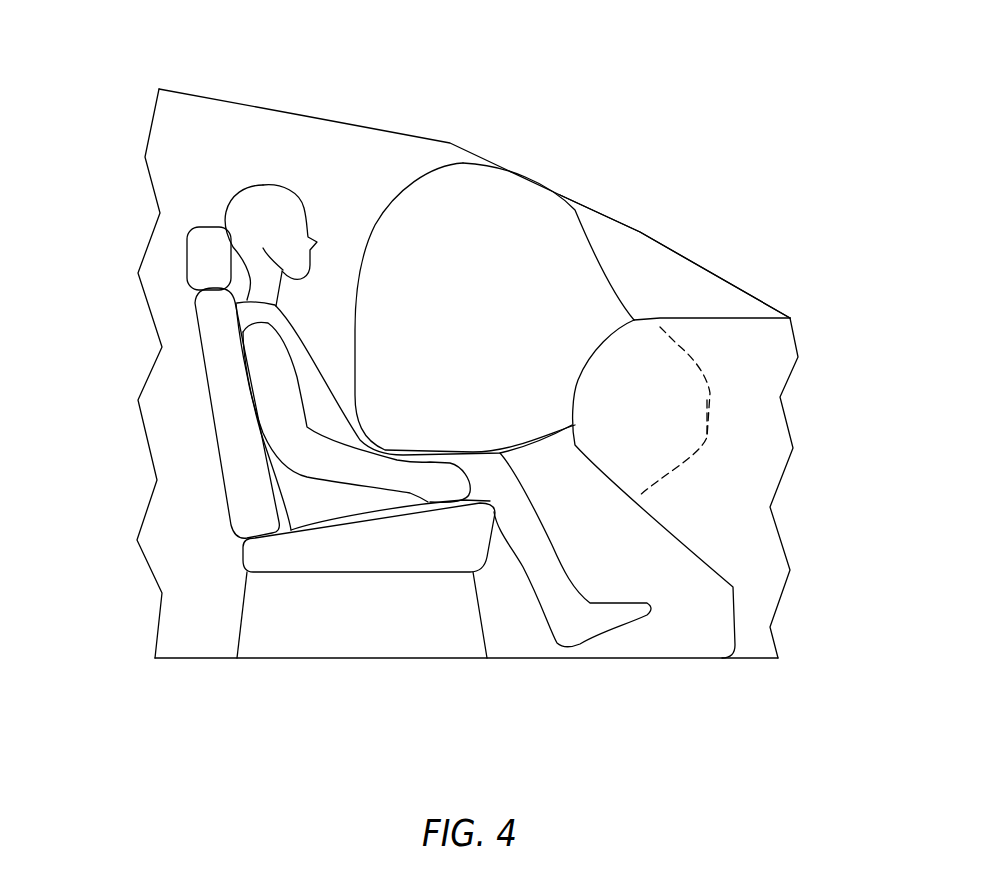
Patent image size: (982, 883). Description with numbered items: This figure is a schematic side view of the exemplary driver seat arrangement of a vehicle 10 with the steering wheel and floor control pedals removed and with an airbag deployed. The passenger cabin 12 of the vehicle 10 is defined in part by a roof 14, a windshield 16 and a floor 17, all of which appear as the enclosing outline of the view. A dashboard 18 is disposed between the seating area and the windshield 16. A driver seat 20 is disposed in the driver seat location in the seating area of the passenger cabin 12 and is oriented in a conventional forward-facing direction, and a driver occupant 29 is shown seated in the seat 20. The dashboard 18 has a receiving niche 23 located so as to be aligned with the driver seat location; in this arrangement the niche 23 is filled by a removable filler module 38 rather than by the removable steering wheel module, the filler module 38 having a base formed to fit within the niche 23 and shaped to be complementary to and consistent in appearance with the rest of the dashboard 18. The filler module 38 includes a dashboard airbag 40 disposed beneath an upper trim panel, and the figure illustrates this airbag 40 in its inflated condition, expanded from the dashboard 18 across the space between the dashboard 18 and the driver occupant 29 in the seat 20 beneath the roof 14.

The vehicle 10 is at (613, 75).
The passenger cabin 12 is at (627, 247).
The roof 14 is at (237, 103).
The windshield 16 is at (682, 253).
The floor 17 is at (517, 660).
The dashboard 18 is at (723, 320).
The driver seat 20 is at (243, 558).
The receiving niche 23 is at (678, 345).
The driver occupant 29 is at (263, 185).
The removable filler module 38 is at (712, 390).
The dashboard airbag 40 is at (422, 170).